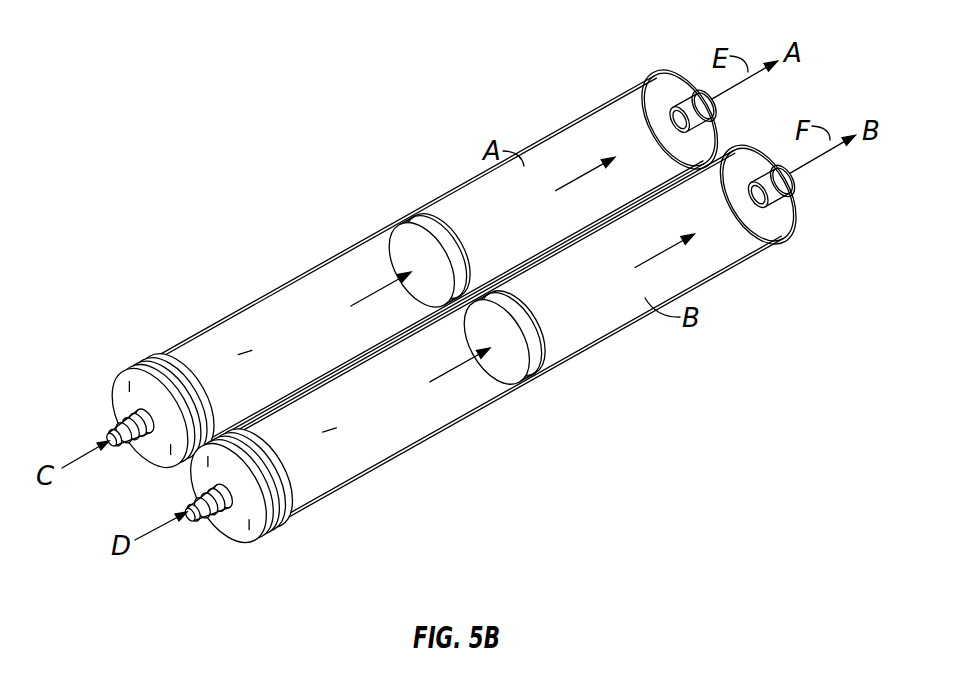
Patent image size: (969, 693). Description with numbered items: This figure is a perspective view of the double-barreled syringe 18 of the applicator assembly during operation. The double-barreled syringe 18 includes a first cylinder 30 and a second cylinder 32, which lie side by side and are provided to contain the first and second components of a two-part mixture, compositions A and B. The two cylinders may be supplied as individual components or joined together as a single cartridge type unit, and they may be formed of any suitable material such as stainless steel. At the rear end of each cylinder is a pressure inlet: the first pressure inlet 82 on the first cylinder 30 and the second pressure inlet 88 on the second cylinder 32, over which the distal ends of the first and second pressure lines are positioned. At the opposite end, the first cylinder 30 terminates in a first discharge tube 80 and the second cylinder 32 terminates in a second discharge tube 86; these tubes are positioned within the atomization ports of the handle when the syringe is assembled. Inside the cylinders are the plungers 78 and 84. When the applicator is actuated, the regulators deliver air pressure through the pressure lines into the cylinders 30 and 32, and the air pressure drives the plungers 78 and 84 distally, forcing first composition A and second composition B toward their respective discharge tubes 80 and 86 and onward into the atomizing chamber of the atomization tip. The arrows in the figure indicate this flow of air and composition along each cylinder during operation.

The double-barreled syringe 18 is at (458, 316).
The first cylinder 30 is at (472, 188).
The second cylinder 32 is at (590, 325).
The plunger 78 is at (410, 222).
The first discharge tube 80 is at (717, 101).
The first pressure inlet 82 is at (119, 419).
The plunger 84 is at (532, 357).
The second discharge tube 86 is at (795, 173).
The second pressure inlet 88 is at (202, 508).